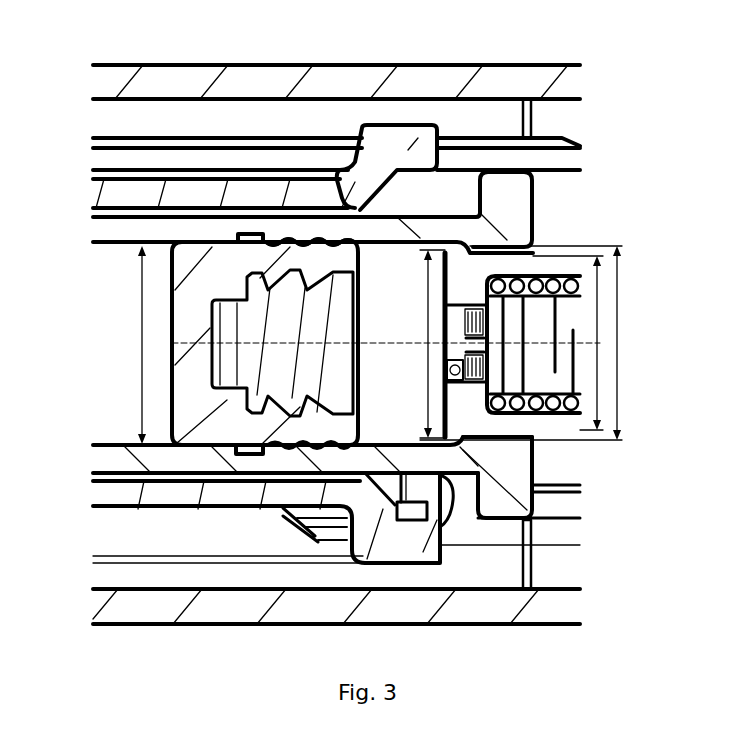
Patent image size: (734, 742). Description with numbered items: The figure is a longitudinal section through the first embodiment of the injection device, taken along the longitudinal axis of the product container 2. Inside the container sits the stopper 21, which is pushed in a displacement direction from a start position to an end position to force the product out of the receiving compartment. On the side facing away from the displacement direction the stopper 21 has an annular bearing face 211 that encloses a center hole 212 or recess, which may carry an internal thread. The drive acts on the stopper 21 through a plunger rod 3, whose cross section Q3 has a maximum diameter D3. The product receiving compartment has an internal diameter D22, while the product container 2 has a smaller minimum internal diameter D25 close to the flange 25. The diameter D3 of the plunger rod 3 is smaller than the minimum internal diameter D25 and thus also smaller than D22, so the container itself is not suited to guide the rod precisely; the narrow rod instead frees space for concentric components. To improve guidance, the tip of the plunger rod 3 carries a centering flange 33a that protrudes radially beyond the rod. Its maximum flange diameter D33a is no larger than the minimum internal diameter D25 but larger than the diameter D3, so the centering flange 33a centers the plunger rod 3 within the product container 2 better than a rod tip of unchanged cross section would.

The product container 2 is at (108, 231).
The stopper 21 is at (187, 298).
The annular bearing face 211 is at (362, 266).
The center hole 212 is at (340, 380).
The flange 25 is at (512, 207).
The plunger rod 3 is at (553, 425).
The centering flange 33a is at (465, 270).
The internal diameter of the product receiving compartment D22 is at (132, 345).
The maximum flange diameter D33a is at (428, 344).
The maximum diameter of the plunger rod cross section D3 is at (568, 343).
The cross section of the plunger rod Q3 is at (586, 364).
The minimum internal diameter of the product container D25 is at (521, 343).